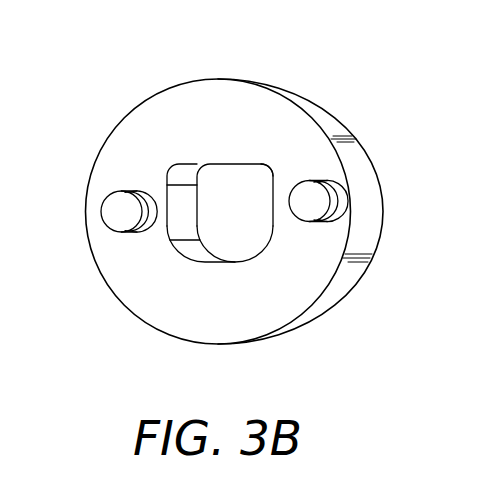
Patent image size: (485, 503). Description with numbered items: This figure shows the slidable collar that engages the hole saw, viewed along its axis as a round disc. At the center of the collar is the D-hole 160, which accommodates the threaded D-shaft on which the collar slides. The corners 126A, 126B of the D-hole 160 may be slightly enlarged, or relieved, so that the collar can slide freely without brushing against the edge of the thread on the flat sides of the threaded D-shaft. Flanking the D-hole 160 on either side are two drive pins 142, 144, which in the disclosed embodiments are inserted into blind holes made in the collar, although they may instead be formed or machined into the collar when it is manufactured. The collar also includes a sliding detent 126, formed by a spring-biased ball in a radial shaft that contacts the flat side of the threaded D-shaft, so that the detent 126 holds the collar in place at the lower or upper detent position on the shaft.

The detent 126 is at (218, 215).
The corner of the D-hole 126A is at (172, 168).
The corner of the D-hole 126B is at (270, 167).
The drive pin 142 is at (318, 200).
The drive pin 144 is at (113, 210).
The D-hole 160 is at (238, 245).